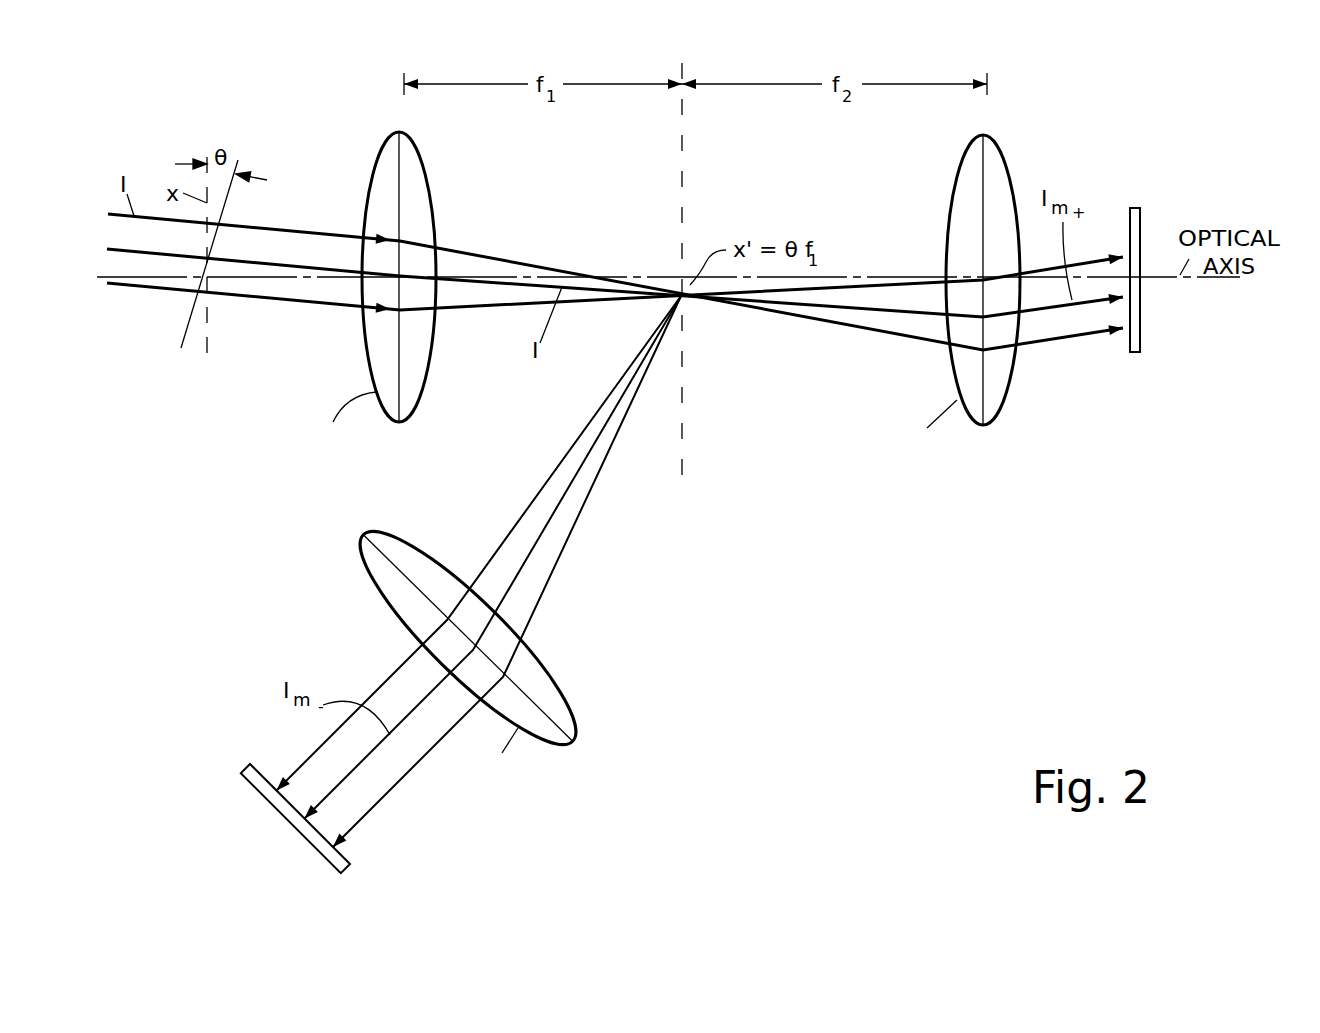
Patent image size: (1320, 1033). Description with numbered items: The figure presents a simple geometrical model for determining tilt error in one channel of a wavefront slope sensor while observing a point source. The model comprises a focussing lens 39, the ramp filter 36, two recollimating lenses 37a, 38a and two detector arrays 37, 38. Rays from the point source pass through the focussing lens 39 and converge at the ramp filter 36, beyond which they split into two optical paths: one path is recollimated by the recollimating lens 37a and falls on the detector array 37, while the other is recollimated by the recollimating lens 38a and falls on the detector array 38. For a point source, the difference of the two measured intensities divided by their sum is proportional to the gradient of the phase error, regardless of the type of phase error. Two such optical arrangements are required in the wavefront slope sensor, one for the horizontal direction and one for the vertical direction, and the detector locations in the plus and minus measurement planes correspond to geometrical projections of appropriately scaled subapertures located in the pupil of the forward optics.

The focussing lens 39 is at (427, 173).
The ramp filter 36 is at (680, 183).
The recollimating lens 37a is at (1010, 165).
The detector array 37 is at (1145, 208).
The recollimating lens 38a is at (362, 555).
The detector array 38 is at (358, 868).